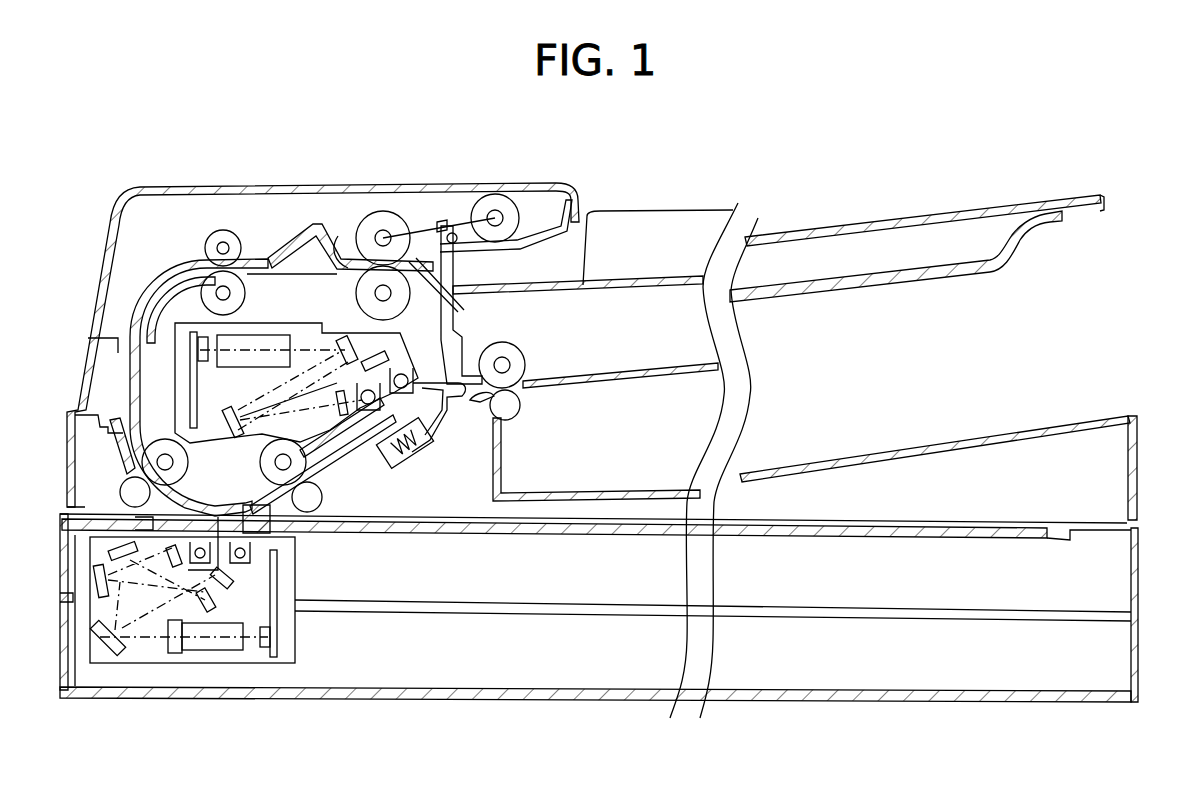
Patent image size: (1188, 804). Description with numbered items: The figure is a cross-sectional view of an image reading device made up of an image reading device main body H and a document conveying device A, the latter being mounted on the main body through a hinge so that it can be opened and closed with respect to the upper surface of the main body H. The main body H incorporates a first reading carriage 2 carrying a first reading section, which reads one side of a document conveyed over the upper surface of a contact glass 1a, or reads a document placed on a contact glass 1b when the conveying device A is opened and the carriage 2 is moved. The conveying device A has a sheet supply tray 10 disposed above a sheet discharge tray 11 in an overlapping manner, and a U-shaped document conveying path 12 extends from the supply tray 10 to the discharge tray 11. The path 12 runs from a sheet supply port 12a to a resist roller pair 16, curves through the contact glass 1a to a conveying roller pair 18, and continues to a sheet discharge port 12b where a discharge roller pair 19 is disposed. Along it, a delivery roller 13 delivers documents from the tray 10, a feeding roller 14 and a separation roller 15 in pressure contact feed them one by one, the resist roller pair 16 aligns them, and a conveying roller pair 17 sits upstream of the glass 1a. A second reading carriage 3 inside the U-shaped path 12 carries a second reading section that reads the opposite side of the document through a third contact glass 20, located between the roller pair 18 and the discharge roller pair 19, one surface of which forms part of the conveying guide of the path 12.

The contact glass 1a is at (121, 494).
The contact glass 1b is at (580, 527).
The first reading carriage 2 is at (313, 642).
The second reading carriage 3 is at (132, 330).
The sheet supply tray 10 is at (643, 283).
The sheet discharge tray 11 is at (632, 493).
The document conveying path 12 is at (170, 337).
The sheet supply port 12a is at (412, 271).
The sheet discharge port 12b is at (523, 390).
The delivery roller 13 is at (497, 210).
The feeding roller 14 is at (397, 227).
The separation roller 15 is at (337, 240).
The resist roller pair 16 is at (223, 240).
The conveying roller pair 17 is at (142, 482).
The conveying roller pair 18 is at (320, 506).
The discharge roller pair 19 is at (512, 418).
The third contact glass 20 is at (367, 457).
The document conveying device A is at (827, 188).
The image reading device main body H is at (850, 702).